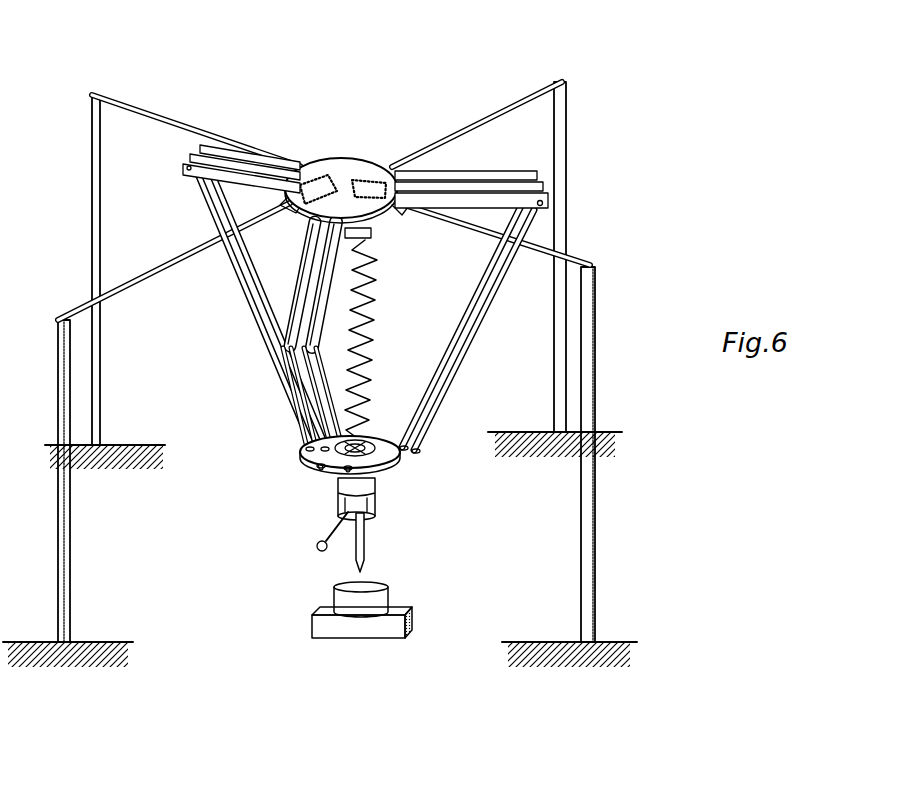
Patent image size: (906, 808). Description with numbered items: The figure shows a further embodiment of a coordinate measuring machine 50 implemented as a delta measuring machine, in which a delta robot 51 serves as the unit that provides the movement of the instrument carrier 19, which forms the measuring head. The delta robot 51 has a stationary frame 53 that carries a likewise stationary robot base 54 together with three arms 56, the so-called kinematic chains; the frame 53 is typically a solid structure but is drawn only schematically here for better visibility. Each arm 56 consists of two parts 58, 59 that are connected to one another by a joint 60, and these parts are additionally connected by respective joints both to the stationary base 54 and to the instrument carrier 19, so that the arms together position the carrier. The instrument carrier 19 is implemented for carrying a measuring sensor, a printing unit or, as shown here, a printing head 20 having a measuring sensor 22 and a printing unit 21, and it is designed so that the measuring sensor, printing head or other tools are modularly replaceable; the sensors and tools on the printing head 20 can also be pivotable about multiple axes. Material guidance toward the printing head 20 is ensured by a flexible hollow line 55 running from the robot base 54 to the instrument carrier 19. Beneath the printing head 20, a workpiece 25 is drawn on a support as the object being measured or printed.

The coordinate measuring machine 50 is at (480, 58).
The delta robot 51 is at (320, 363).
The stationary frame 53 is at (177, 122).
The robot base 54 is at (343, 170).
The flexible hollow line 55 is at (370, 320).
The arms 56 is at (196, 230).
The arm part 58 is at (490, 203).
The arm part 59 is at (423, 417).
The joint 60 is at (547, 207).
The instrument carrier 19 is at (390, 470).
The printing head 20 is at (302, 497).
The printing unit 21 is at (367, 543).
The measuring sensor 22 is at (318, 548).
The workpiece 25 is at (398, 653).